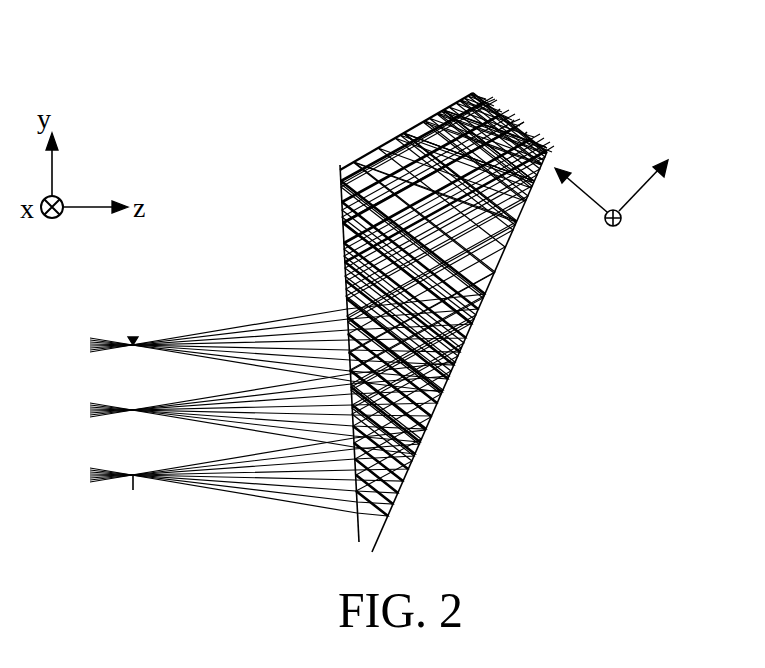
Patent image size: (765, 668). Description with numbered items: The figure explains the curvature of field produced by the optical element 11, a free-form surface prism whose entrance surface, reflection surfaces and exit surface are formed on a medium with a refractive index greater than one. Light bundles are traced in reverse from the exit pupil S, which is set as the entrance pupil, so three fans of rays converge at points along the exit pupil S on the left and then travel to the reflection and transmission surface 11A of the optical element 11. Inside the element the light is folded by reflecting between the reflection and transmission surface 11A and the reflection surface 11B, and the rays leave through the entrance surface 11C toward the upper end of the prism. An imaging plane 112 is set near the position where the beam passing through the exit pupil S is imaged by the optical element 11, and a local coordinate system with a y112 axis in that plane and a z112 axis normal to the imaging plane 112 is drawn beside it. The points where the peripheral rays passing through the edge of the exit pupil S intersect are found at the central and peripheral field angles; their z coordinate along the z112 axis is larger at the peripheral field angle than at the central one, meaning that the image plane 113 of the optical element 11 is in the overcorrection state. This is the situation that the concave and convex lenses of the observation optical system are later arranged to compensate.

The optical element 11 is at (462, 333).
The reflection and transmission surface 11A is at (340, 233).
The reflection surface 11B is at (418, 442).
The entrance surface 11C is at (356, 170).
The imaging plane 112 is at (477, 93).
The image plane 113 is at (482, 92).
The exit pupil S is at (132, 337).
The y112 axis y112 is at (588, 179).
The z112 axis z112 is at (674, 170).